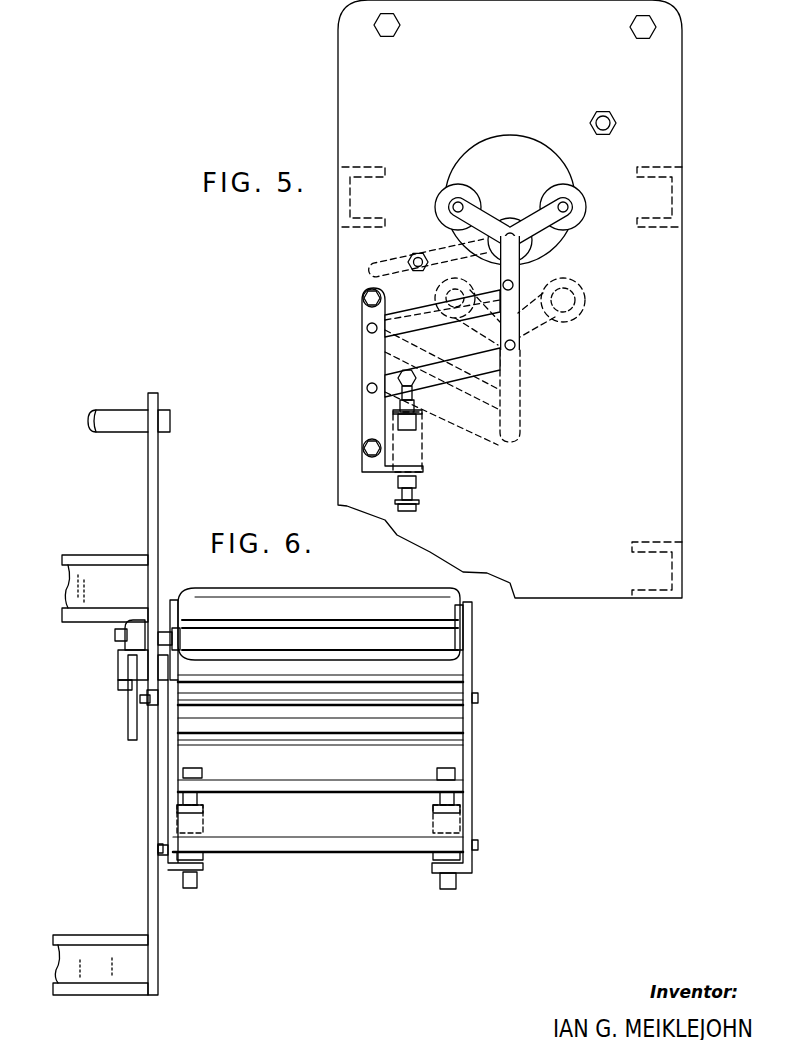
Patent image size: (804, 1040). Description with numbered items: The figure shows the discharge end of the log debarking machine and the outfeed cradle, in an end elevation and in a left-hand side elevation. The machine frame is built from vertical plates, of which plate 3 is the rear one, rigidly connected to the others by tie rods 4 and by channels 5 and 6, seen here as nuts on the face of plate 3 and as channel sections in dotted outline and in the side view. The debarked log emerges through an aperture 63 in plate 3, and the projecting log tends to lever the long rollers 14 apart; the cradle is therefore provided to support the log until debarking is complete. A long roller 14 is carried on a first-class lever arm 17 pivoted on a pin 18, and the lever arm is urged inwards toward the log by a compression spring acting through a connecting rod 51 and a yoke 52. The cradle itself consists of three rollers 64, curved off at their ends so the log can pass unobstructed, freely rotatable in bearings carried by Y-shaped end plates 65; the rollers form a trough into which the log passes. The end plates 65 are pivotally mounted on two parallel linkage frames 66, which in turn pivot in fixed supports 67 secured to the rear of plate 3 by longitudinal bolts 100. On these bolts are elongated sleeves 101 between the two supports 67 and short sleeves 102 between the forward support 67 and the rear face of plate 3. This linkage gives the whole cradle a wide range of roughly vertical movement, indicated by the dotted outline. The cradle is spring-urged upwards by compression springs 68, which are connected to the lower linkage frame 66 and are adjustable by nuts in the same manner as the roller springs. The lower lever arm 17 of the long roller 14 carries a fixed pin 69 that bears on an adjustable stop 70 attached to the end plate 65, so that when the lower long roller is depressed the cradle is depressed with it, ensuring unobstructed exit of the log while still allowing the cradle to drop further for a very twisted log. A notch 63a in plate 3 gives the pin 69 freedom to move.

In FIG. 5, the vertical plate 3 is at (338, 108).
In FIG. 6, the vertical plate 3 is at (158, 462).
In FIG. 5, the tie rod 4 is at (400, 27).
In FIG. 6, the tie rod 4 is at (117, 410).
In FIG. 5, the channel 5 is at (338, 210).
In FIG. 6, the channel 5 is at (85, 575).
In FIG. 5, the channel 6 is at (682, 573).
In FIG. 6, the channel 6 is at (100, 960).
In FIG. 5, the long roller 14 is at (546, 247).
In FIG. 5, the lever arm 17 is at (487, 247).
In FIG. 6, the lever arm 17 is at (118, 636).
In FIG. 5, the pin 18 is at (612, 119).
In FIG. 6, the pin 18 is at (120, 659).
In FIG. 6, the connecting rod 51 is at (128, 736).
In FIG. 6, the yoke 52 is at (125, 684).
In FIG. 5, the aperture 63 is at (560, 147).
In FIG. 5, the notch 63a is at (522, 278).
In FIG. 5, the roller 64 is at (510, 232).
In FIG. 6, the roller 64 is at (385, 590).
In FIG. 5, the Y-shaped end plate 65 is at (538, 228).
In FIG. 6, the Y-shaped end plate 65 is at (168, 610).
In FIG. 5, the linkage frame 66 is at (447, 353).
In FIG. 6, the linkage frame 66 is at (440, 678).
In FIG. 5, the fixed support 67 is at (362, 362).
In FIG. 6, the fixed support 67 is at (168, 782).
In FIG. 5, the compression spring 68 is at (422, 450).
In FIG. 6, the compression spring 68 is at (203, 815).
In FIG. 6, the fixed pin 69 is at (164, 633).
In FIG. 6, the adjustable stop 70 is at (160, 668).
In FIG. 5, the longitudinal bolt 100 is at (362, 297).
In FIG. 6, the longitudinal bolt 100 is at (478, 698).
In FIG. 6, the elongated sleeve 101 is at (440, 705).
In FIG. 6, the short sleeve 102 is at (165, 700).